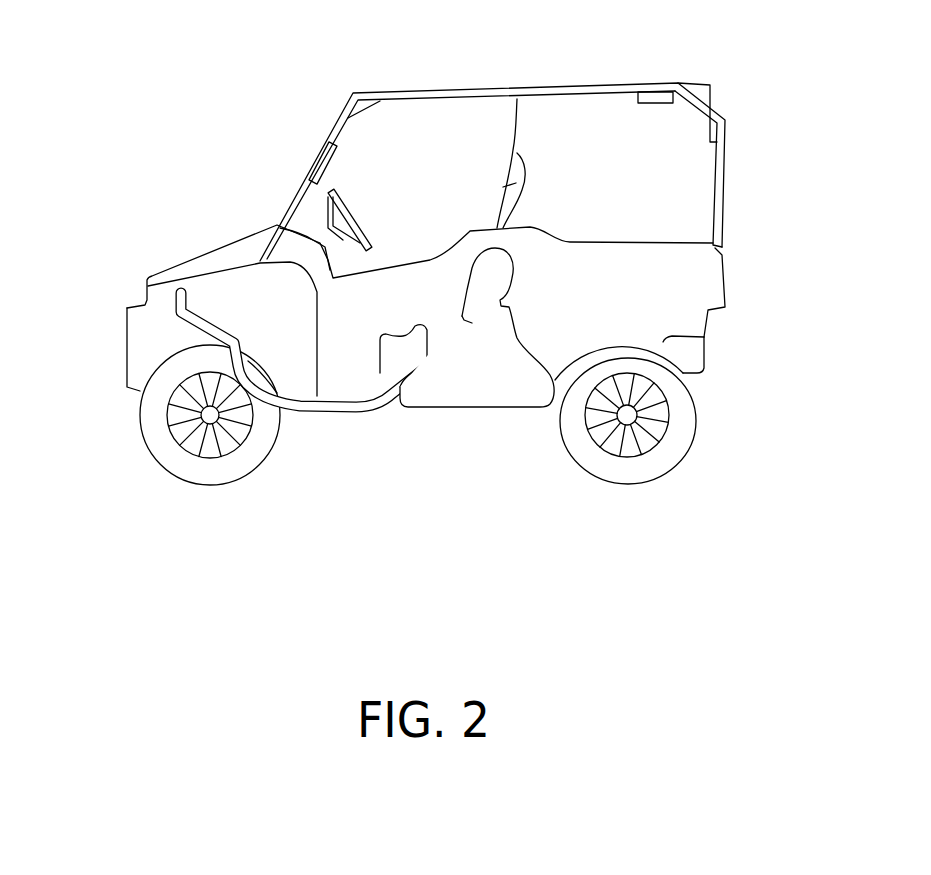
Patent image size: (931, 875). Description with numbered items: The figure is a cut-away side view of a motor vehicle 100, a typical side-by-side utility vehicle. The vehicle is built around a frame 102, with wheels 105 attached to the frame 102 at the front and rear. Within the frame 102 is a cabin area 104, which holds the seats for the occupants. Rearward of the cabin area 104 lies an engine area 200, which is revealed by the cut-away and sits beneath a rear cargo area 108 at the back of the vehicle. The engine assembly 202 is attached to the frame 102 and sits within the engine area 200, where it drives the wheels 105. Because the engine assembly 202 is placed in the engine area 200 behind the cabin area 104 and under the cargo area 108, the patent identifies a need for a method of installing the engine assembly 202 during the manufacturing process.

The motor vehicle 100 is at (166, 564).
The frame 102 is at (723, 211).
The cabin area 104 is at (417, 159).
The wheels 105 is at (160, 442).
The rear cargo area 108 is at (657, 196).
The engine area 200 is at (521, 424).
The engine assembly 202 is at (467, 380).